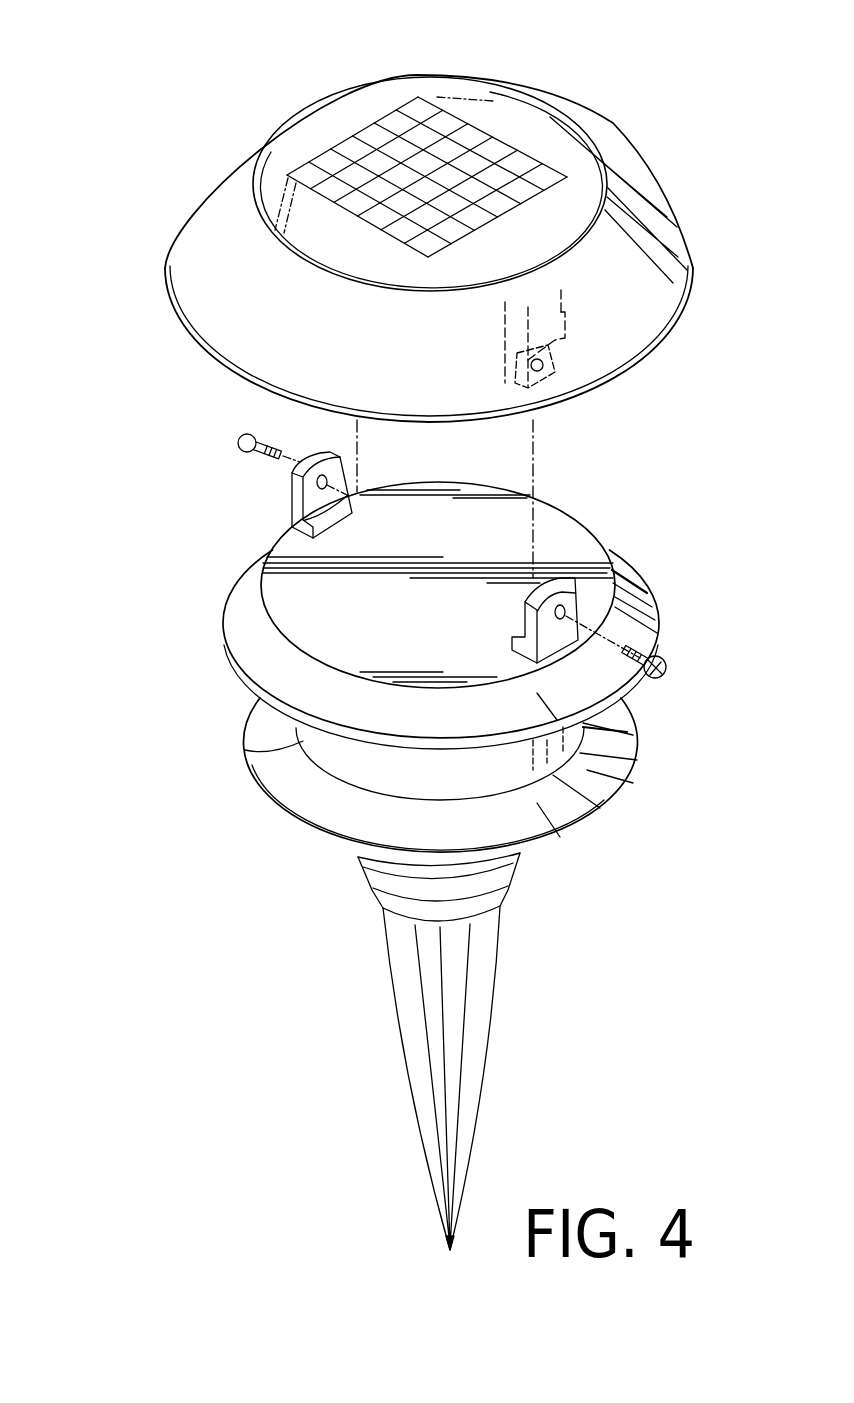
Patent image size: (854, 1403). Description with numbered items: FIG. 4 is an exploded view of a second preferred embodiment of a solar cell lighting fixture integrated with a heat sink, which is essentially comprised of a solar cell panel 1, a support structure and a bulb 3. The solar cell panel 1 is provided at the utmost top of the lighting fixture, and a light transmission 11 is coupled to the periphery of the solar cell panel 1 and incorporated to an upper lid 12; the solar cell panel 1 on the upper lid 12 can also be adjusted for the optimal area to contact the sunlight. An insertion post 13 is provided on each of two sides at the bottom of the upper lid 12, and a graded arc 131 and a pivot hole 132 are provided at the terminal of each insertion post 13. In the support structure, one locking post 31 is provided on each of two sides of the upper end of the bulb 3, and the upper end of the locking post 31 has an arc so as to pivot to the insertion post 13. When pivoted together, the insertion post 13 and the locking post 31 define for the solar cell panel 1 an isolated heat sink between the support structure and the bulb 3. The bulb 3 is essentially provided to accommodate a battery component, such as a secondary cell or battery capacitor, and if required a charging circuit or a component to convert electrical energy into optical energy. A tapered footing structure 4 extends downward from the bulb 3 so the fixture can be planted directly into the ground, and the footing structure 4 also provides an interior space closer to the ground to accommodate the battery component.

The solar cell panel 1 is at (470, 143).
The light transmission 11 is at (383, 78).
The upper lid 12 is at (192, 255).
The insertion post 13 is at (580, 308).
The graded arc 131 is at (527, 387).
The pivot hole 132 is at (555, 370).
The locking post 31 is at (290, 500).
The bulb 3 is at (243, 748).
The tapered footing structure 4 is at (405, 1017).